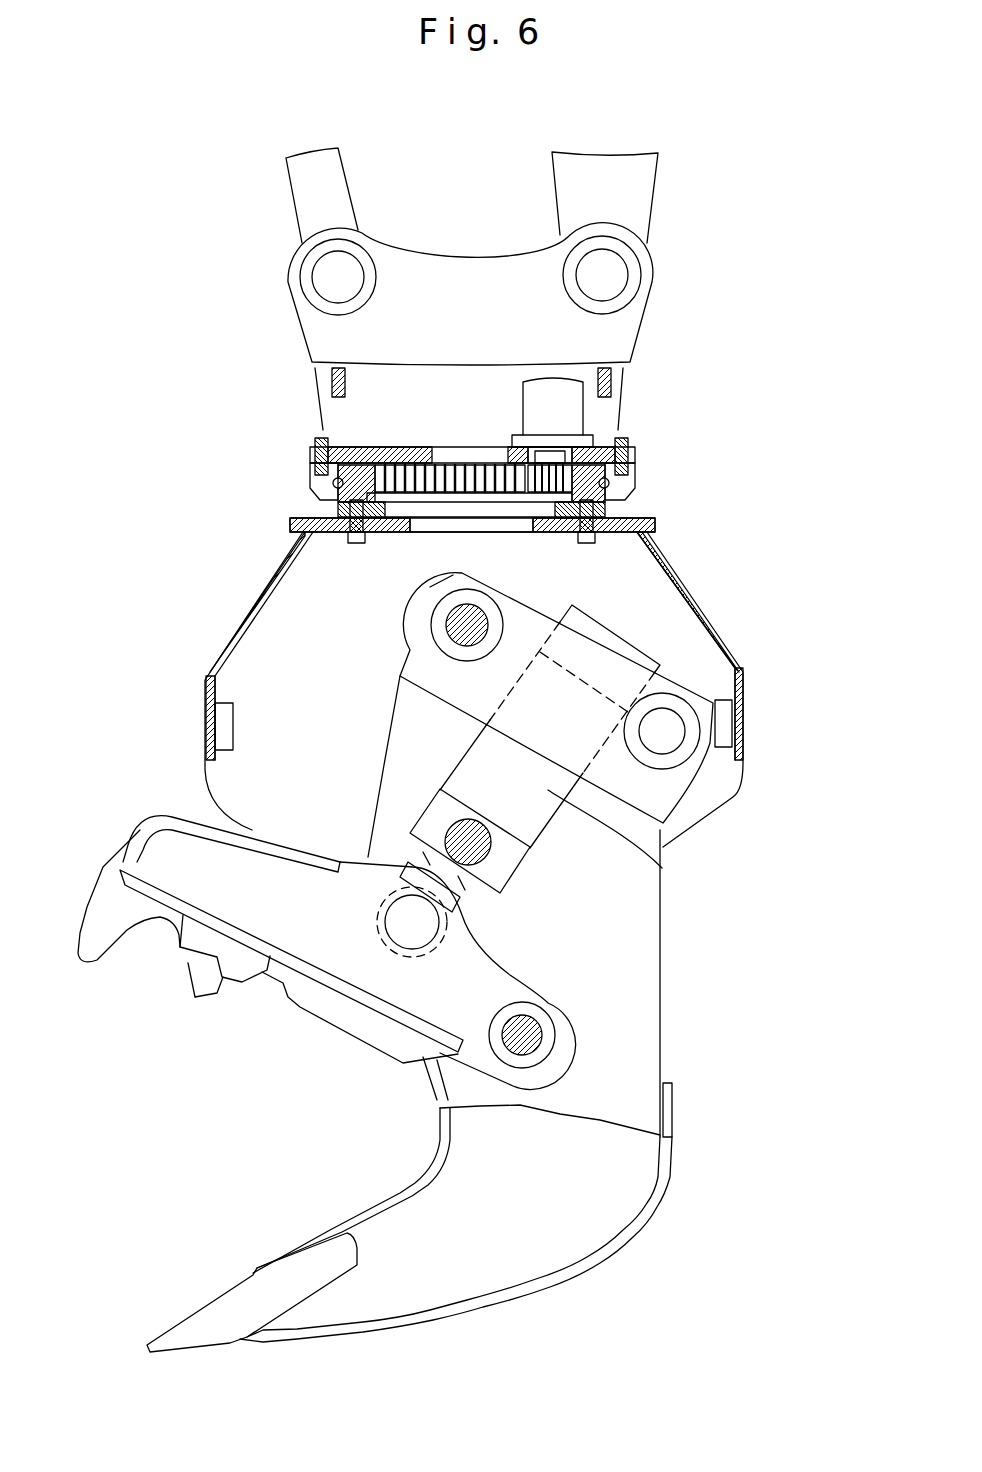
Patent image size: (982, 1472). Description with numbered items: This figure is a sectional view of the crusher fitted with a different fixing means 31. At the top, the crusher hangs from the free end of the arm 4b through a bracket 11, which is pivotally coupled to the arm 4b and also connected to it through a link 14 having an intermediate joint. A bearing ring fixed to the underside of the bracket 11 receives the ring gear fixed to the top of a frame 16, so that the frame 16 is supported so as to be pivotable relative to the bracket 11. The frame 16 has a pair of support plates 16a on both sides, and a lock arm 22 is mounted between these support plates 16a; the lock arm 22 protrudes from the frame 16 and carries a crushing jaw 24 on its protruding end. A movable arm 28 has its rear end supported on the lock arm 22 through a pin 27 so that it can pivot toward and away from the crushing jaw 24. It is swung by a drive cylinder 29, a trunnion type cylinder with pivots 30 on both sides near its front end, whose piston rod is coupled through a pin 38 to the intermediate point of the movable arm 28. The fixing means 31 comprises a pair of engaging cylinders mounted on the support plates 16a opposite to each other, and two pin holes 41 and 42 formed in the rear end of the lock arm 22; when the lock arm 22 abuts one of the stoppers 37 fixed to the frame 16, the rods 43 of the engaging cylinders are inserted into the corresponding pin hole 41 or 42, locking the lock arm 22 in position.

The link 14 is at (332, 193).
The arm 4b is at (640, 187).
The bracket 11 is at (305, 447).
The frame 16 is at (290, 525).
The support plates 16a is at (248, 662).
The rods 43 is at (447, 606).
The pin hole 41 is at (447, 628).
The fixing means 31 is at (680, 668).
The pin hole 42 is at (670, 720).
The stoppers 37 is at (722, 720).
The movable arm 28 is at (160, 815).
The drive cylinder 29 is at (662, 870).
The pivots 30 is at (520, 870).
The pin 27 is at (528, 1033).
The lock arm 22 is at (666, 1047).
The pin 38 is at (410, 930).
The crushing jaw 24 is at (207, 1312).